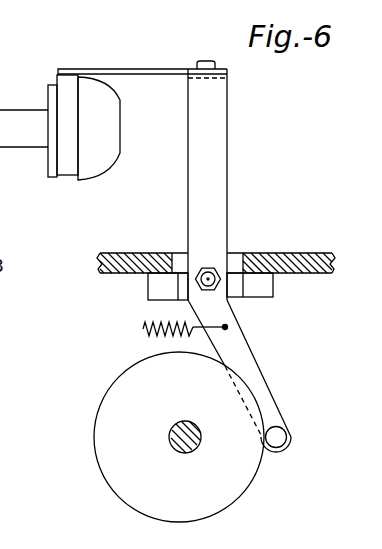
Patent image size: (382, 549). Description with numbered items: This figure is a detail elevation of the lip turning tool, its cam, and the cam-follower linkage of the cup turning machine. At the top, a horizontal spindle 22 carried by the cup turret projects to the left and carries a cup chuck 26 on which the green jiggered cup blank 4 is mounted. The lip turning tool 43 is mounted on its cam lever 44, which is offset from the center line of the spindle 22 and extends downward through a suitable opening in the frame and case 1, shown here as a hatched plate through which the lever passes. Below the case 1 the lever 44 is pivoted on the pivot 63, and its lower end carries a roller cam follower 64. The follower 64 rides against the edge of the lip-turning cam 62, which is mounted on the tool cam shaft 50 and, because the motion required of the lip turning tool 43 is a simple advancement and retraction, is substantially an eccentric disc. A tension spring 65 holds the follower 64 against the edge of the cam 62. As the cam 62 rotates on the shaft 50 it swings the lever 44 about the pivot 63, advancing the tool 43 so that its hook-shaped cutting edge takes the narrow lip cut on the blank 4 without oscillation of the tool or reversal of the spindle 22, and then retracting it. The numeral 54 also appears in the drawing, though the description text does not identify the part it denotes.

The frame and case 1 is at (293, 252).
The cup blank 4 is at (117, 98).
The spindle 22 is at (15, 109).
The cup chuck 26 is at (62, 165).
The lip turning tool 43 is at (131, 70).
The cam lever 44 is at (217, 170).
The tool cam shaft 50 is at (196, 447).
The support 54 is at (0, 347).
The lip-turning cam 62 is at (237, 478).
The pivot 63 is at (223, 284).
The roller cam follower 64 is at (287, 437).
The tension spring 65 is at (146, 338).